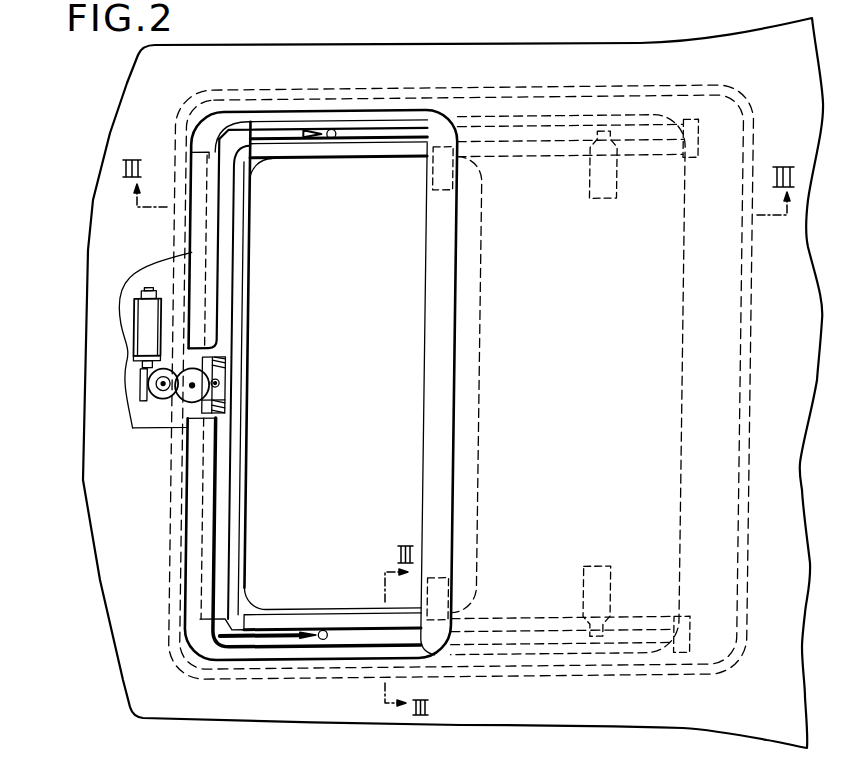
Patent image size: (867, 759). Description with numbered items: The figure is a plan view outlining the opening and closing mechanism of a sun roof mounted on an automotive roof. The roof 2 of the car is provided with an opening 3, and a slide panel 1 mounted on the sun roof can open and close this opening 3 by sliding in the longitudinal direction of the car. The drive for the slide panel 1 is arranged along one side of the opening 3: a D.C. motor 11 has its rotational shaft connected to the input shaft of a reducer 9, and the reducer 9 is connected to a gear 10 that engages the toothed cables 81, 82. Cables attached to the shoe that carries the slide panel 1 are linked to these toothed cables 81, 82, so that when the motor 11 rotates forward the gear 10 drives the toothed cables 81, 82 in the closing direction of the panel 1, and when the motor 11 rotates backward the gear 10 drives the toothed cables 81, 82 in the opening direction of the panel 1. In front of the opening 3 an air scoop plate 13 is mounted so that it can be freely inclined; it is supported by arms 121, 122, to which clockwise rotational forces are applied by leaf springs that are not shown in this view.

The slide panel 1 is at (445, 330).
The roof 2 is at (331, 66).
The opening 3 is at (283, 308).
The reducer 9 is at (205, 402).
The gear 10 is at (220, 384).
The D.C. motor 11 is at (134, 307).
The air scoop plate 13 is at (213, 208).
The toothed cable 81 is at (228, 412).
The toothed cable 82 is at (227, 367).
The arm 121 is at (255, 620).
The arm 122 is at (292, 131).